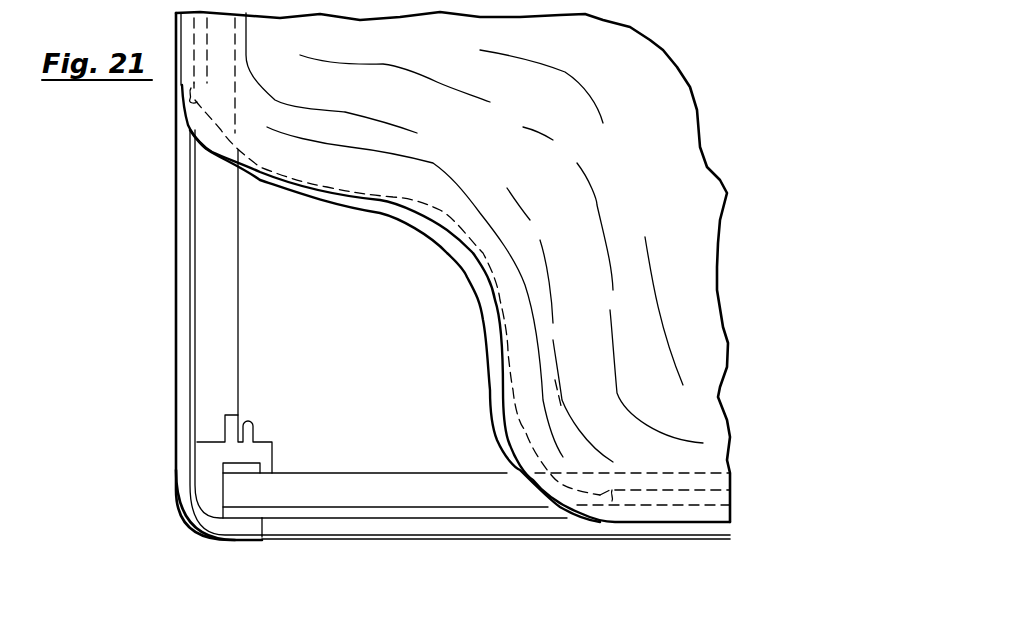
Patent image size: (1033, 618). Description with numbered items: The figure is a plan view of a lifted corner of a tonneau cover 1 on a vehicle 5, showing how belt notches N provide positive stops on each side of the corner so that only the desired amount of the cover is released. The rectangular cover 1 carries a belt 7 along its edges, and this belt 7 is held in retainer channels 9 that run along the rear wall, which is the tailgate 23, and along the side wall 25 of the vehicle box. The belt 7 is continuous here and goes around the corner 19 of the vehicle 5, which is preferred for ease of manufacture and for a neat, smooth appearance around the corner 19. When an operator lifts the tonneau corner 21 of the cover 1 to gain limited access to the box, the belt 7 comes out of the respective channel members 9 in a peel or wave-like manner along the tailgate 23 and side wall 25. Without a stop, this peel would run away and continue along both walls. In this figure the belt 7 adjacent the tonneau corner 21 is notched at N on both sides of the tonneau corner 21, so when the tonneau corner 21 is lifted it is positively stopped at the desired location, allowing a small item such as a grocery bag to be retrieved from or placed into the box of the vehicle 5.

The tonneau cover 1 is at (648, 145).
The vehicle 5 is at (152, 197).
The belt 7 is at (408, 212).
The retainer channel 9 is at (226, 307).
The corner of the vehicle 19 is at (184, 528).
The tonneau corner 21 is at (474, 237).
The tailgate 23 is at (386, 540).
The side wall 25 is at (176, 268).
The notch N is at (197, 96).